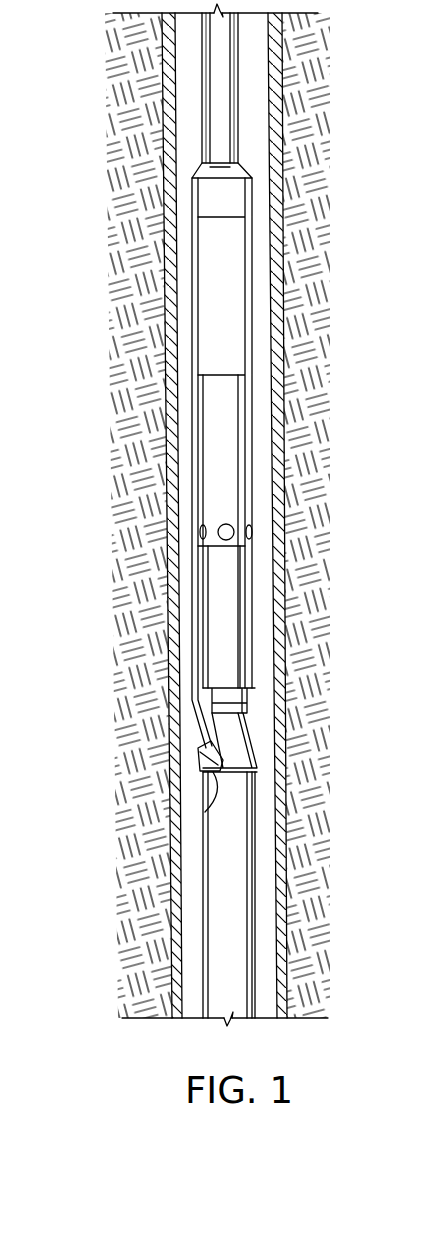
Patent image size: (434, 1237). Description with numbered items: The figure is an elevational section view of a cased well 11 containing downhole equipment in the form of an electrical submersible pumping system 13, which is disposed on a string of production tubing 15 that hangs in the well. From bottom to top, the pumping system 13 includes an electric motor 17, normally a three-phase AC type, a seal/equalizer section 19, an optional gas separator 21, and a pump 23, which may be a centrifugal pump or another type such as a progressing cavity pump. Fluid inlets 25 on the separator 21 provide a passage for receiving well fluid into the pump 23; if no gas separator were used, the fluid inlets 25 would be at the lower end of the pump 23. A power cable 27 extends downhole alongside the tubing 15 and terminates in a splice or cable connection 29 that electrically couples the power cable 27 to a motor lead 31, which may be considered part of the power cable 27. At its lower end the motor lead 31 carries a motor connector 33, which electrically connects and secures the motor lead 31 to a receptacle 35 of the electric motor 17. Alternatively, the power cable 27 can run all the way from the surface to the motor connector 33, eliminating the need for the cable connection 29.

The cased well 11 is at (283, 447).
The electrical submersible pumping system 13 is at (255, 630).
The production tubing 15 is at (230, 135).
The electric motor 17 is at (238, 866).
The seal/equalizer section 19 is at (238, 668).
The gas separator 21 is at (230, 408).
The pump 23 is at (235, 245).
The fluid inlets 25 is at (234, 508).
The power cable 27 is at (207, 99).
The cable connection 29 is at (197, 168).
The motor lead 31 is at (192, 297).
The motor connector 33 is at (200, 752).
The receptacle 35 is at (205, 812).